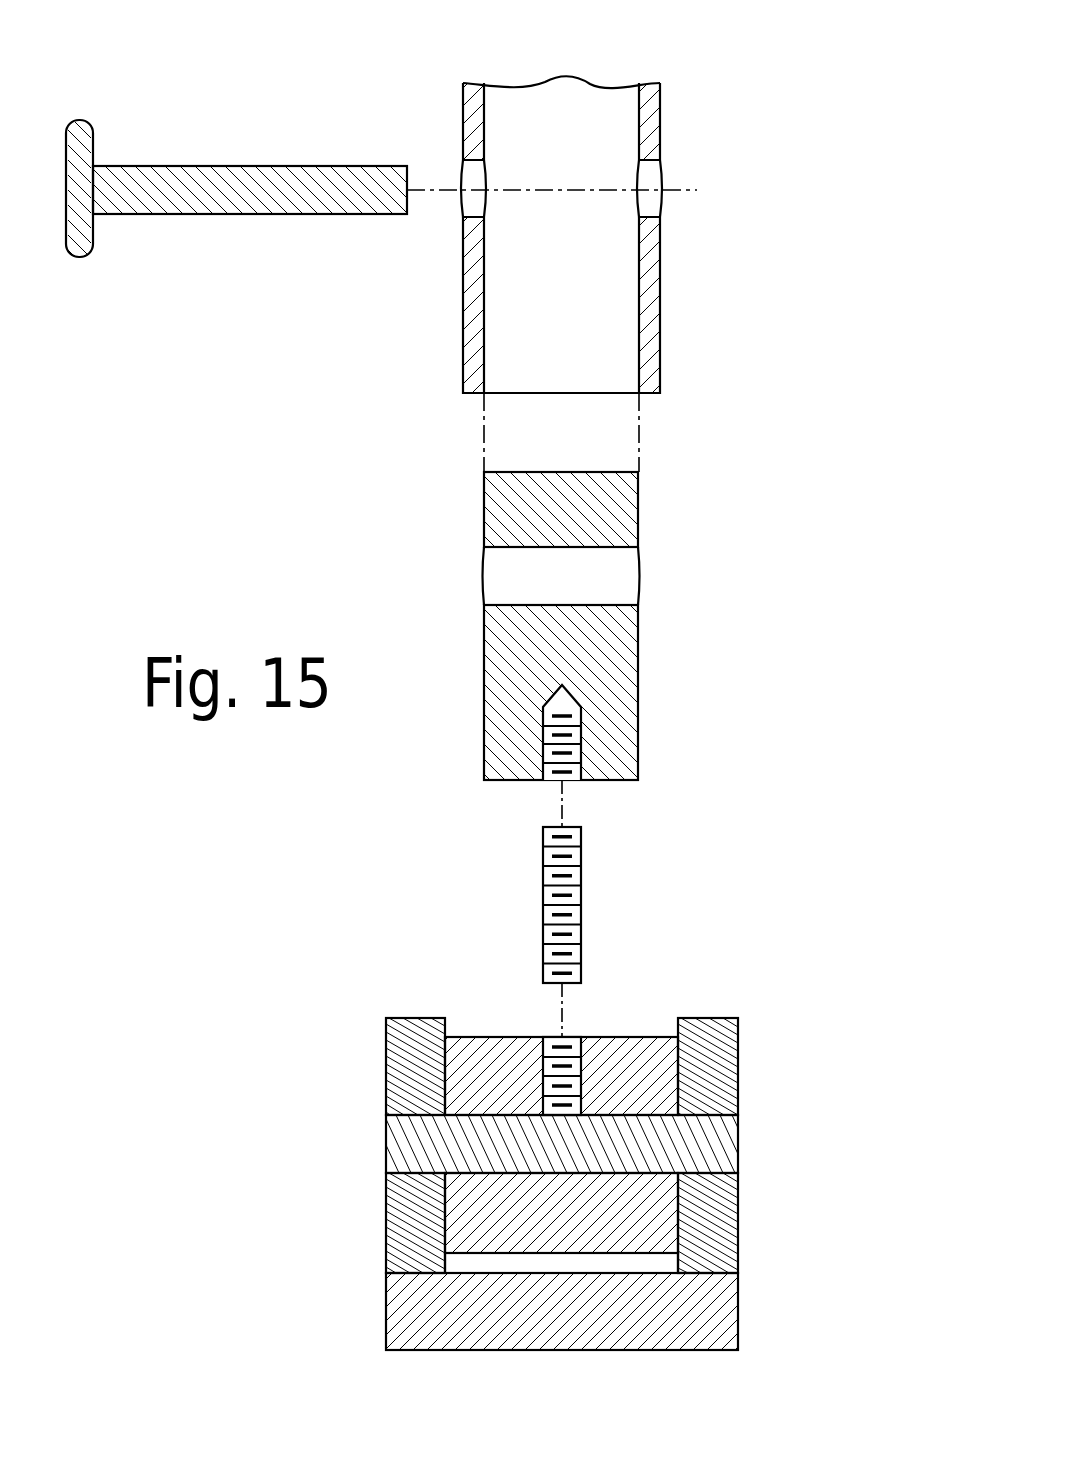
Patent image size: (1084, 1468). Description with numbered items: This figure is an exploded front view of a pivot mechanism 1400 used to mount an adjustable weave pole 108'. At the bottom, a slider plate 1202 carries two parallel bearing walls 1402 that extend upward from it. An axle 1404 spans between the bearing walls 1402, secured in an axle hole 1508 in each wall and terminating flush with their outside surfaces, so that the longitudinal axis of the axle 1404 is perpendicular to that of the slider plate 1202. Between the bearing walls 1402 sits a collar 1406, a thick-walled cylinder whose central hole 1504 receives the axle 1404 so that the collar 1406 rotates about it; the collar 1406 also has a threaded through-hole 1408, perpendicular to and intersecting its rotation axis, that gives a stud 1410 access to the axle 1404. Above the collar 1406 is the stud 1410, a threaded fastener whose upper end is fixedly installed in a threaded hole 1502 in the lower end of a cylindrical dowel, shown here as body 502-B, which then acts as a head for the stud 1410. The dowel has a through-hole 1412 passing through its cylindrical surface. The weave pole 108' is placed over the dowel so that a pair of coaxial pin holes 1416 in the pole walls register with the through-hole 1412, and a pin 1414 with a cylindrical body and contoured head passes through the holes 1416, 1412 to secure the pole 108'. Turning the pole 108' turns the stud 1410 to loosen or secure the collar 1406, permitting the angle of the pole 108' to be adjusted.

The pivot mechanism 1400 is at (846, 427).
The pin 1414 is at (217, 214).
The weave pole 108' is at (621, 234).
The pin holes 1416 is at (657, 178).
The through-hole 1412 is at (638, 573).
The anchor body 502-B is at (638, 708).
The threaded hole 1502 is at (552, 780).
The stud 1410 is at (543, 855).
The threaded through-hole 1408 is at (548, 1037).
The collar 1406 is at (628, 1037).
The bearing walls 1402 is at (386, 1078).
The axle 1404 is at (386, 1155).
The axle hole 1508 is at (710, 1115).
The hole 1504 is at (658, 1173).
The slider plate 1202 is at (738, 1332).